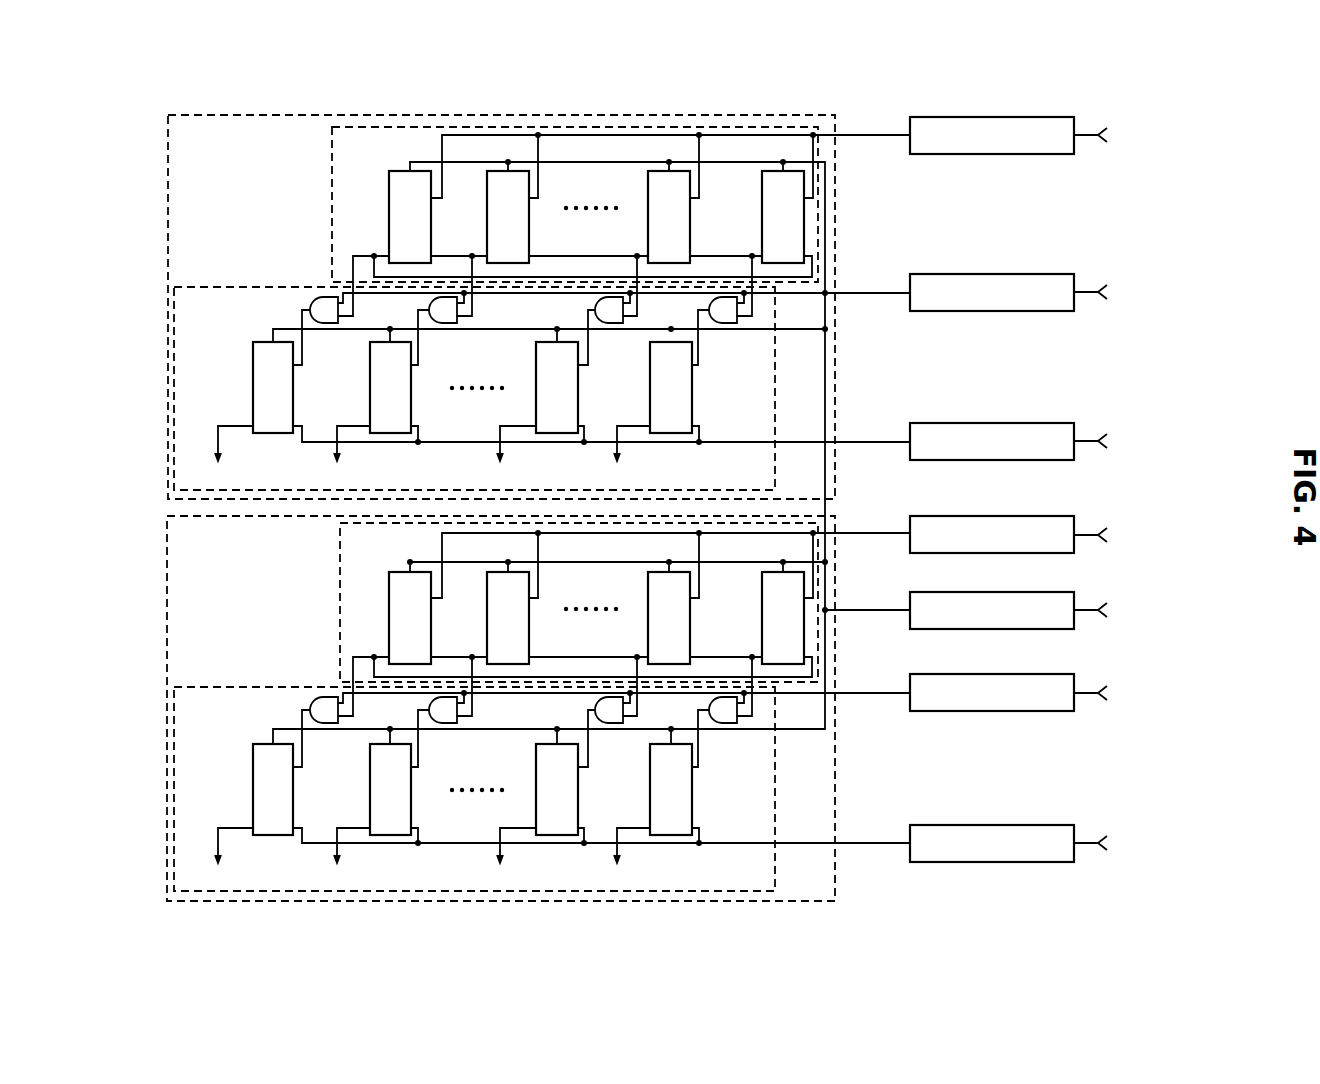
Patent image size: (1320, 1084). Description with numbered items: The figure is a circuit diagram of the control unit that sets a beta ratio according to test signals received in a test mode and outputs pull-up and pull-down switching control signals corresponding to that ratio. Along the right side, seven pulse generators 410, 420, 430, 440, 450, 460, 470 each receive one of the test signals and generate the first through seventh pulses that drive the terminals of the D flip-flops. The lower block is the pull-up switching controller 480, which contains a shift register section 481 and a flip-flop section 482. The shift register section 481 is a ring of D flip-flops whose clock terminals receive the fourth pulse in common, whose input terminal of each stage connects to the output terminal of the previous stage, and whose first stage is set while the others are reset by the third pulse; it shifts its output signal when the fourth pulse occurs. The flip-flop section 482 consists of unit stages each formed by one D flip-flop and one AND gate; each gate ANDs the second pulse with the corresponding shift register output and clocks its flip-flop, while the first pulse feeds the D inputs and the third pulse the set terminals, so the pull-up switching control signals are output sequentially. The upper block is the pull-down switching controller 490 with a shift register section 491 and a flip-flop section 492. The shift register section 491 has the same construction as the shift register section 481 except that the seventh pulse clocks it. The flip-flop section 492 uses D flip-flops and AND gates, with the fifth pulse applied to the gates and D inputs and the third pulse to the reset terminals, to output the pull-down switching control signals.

The pulse generator 410 is at (965, 862).
The pulse generator 420 is at (965, 711).
The pulse generator 430 is at (965, 629).
The pulse generator 440 is at (965, 553).
The pulse generator 450 is at (965, 460).
The pulse generator 460 is at (965, 311).
The pulse generator 470 is at (965, 154).
The pull-up switching controller 480 is at (167, 703).
The shift register section 481 is at (340, 605).
The flip-flop section 482 is at (174, 787).
The pull-down switching controller 490 is at (168, 331).
The shift register section 491 is at (332, 228).
The flip-flop section 492 is at (174, 405).